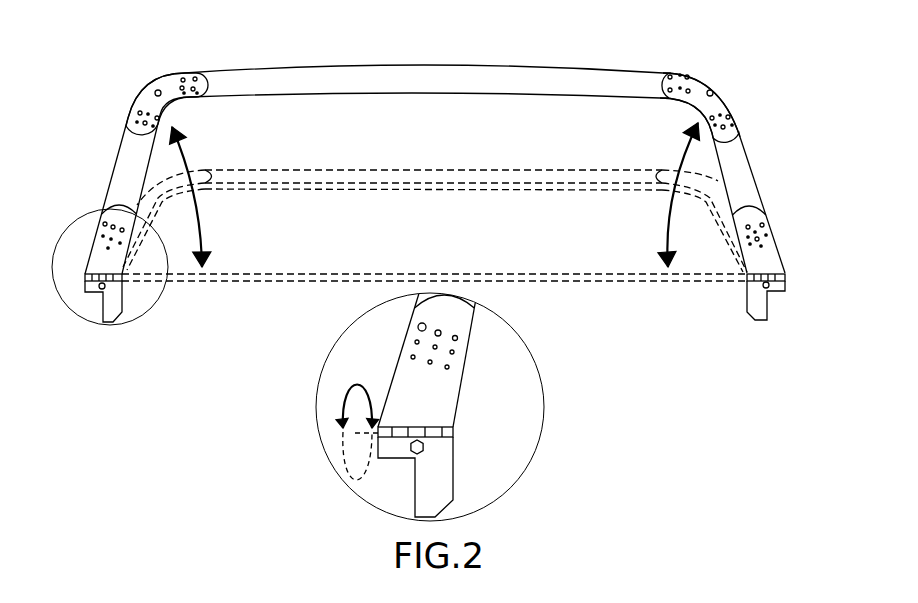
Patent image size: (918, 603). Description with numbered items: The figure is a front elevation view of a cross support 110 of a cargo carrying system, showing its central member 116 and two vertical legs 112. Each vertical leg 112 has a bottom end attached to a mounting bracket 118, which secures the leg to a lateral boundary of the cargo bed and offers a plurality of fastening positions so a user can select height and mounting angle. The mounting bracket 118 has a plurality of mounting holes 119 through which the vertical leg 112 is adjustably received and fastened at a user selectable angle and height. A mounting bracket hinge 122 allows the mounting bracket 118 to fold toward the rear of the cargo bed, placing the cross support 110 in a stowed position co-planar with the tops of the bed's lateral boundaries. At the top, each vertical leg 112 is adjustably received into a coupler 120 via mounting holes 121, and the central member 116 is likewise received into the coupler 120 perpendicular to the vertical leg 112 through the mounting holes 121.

The cross support 110 is at (432, 267).
The vertical leg 112 is at (125, 170).
The central member 116 is at (435, 63).
The mounting bracket 118 is at (93, 257).
The mounting holes 119 is at (103, 230).
The coupler 120 is at (168, 80).
The mounting holes 121 is at (185, 73).
The mounting bracket hinge 122 is at (450, 437).